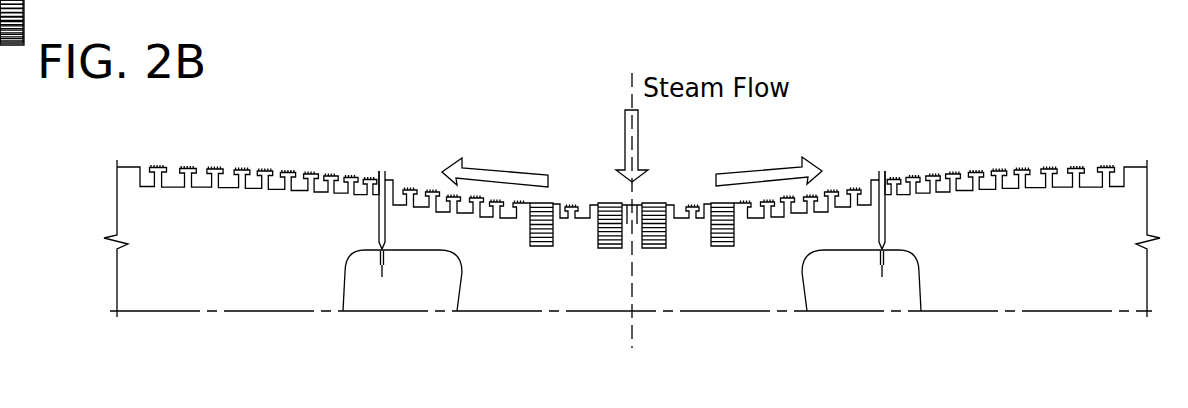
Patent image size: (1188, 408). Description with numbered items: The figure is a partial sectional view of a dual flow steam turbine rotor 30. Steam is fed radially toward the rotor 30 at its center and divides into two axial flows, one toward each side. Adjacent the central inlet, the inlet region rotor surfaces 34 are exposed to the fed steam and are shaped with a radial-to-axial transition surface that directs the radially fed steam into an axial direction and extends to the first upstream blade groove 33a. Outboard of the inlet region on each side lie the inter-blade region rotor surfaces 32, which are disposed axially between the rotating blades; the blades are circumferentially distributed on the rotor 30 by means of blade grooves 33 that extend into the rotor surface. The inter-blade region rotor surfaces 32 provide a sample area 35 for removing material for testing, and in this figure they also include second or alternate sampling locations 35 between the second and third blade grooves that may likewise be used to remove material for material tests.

The dual flow steam turbine rotor 30 is at (191, 298).
The inter-blade region rotor surfaces 32 is at (427, 155).
The blade grooves 33 is at (370, 203).
The first upstream blade groove 33a is at (650, 258).
The inlet region rotor surfaces 34 is at (613, 203).
The sample area 35 is at (535, 258).